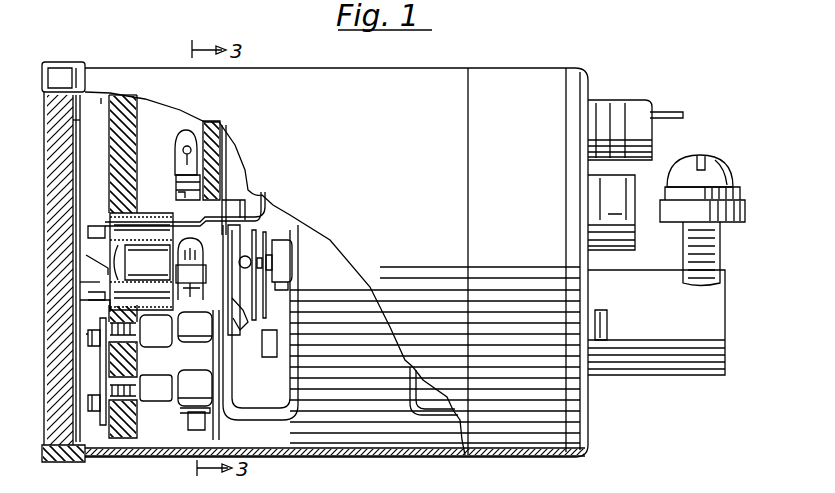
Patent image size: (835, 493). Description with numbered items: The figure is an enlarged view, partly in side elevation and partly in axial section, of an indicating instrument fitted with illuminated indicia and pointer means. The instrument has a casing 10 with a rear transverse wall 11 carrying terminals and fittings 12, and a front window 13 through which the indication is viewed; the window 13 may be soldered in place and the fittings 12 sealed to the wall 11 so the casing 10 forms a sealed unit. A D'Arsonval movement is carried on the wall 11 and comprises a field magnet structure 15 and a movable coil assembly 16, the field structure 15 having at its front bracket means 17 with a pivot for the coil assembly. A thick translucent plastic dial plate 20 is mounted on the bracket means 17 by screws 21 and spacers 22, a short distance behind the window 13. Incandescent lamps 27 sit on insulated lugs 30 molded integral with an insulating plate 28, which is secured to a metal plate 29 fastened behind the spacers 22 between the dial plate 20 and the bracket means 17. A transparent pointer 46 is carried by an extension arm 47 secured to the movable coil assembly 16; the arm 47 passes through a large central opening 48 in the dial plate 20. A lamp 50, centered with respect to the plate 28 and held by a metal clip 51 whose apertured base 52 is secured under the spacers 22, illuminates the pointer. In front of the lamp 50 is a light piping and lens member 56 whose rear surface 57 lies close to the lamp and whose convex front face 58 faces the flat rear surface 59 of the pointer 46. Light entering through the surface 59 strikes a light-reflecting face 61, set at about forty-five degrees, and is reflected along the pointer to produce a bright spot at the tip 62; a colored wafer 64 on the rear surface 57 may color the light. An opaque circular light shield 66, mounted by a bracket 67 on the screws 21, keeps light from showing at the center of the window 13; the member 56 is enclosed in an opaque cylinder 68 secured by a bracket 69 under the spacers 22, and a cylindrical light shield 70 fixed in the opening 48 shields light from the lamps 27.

The casing 10 is at (288, 87).
The rear transverse wall 11 is at (598, 404).
The terminals and fittings 12 is at (705, 124).
The front window 13 is at (62, 367).
The field magnet structure 15 is at (360, 413).
The movable coil assembly 16 is at (262, 297).
The bracket means 17 is at (263, 413).
The dial plate 20 is at (125, 152).
The screws 21 is at (100, 388).
The spacers 22 is at (158, 392).
The incandescent lamps 27 is at (180, 138).
The insulating plate 28 is at (220, 128).
The metal plate 29 is at (227, 160).
The insulated lugs 30 is at (223, 172).
The pointer 46 is at (97, 182).
The extension arm 47 is at (187, 217).
The central opening 48 is at (100, 177).
The lamp 50 is at (240, 233).
The metal clip 51 is at (249, 320).
The apertured base 52 is at (217, 365).
The light piping and lens member 56 is at (165, 215).
The rear surface 57 is at (170, 258).
The convex lens-like front face 58 is at (107, 257).
The flat rear surface 59 is at (100, 260).
The light-reflecting face 61 is at (97, 270).
The tip 62 is at (90, 200).
The colored wafer 64 is at (190, 252).
The opaque circular light shield 66 is at (80, 282).
The bracket 67 is at (80, 303).
The opaque cylinder 68 is at (112, 284).
The bracket 69 is at (195, 362).
The cylindrical light shield 70 is at (165, 345).